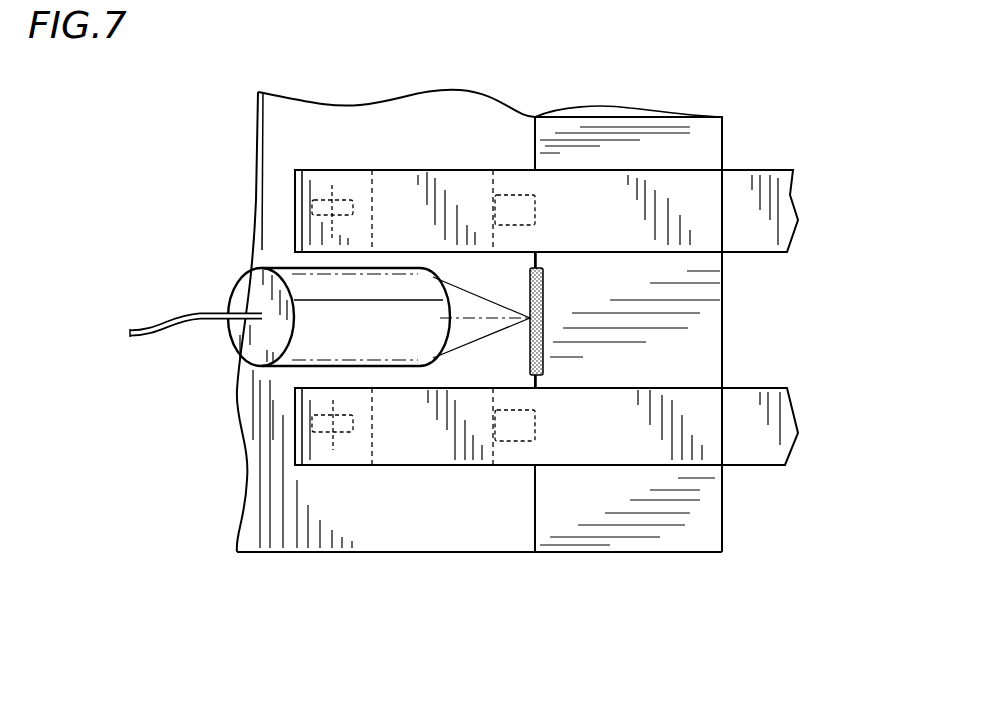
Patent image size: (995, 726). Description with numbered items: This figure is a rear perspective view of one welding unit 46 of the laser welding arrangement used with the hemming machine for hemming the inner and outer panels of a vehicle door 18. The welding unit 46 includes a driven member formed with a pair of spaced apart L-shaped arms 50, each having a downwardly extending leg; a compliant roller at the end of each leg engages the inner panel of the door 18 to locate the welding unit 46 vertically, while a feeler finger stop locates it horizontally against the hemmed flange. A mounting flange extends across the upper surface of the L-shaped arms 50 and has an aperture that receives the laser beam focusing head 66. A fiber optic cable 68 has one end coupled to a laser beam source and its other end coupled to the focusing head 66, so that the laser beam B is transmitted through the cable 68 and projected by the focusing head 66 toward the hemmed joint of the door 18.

The vehicle door 18 is at (700, 553).
The welding unit 46 is at (757, 118).
The L-shaped arms 50 is at (628, 172).
The laser beam focusing head 66 is at (296, 266).
The fiber optic cable 68 is at (167, 338).
The light beam B is at (485, 340).